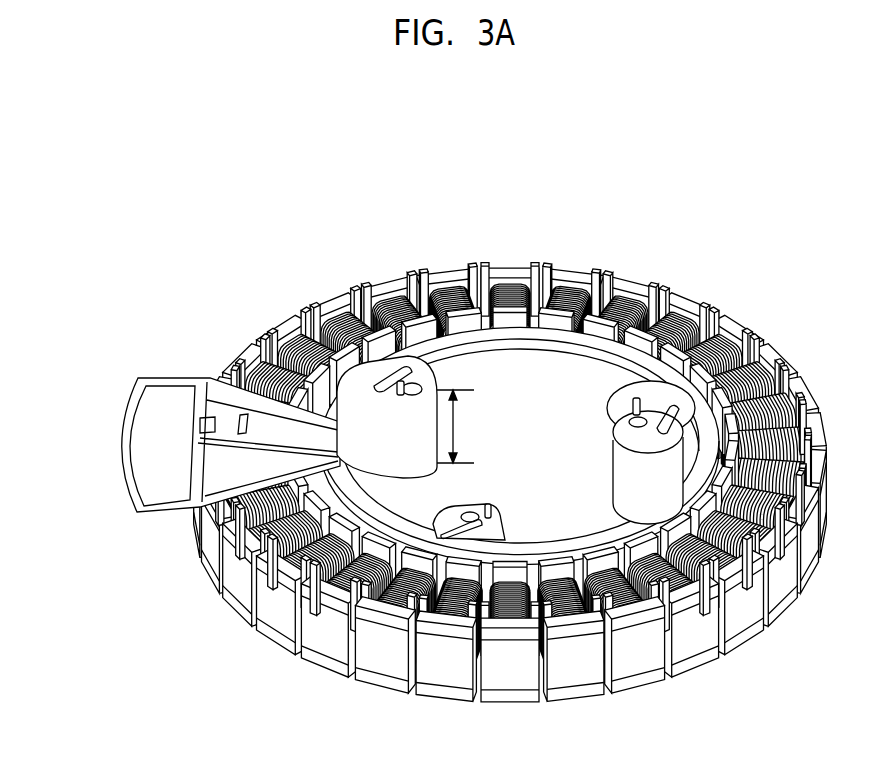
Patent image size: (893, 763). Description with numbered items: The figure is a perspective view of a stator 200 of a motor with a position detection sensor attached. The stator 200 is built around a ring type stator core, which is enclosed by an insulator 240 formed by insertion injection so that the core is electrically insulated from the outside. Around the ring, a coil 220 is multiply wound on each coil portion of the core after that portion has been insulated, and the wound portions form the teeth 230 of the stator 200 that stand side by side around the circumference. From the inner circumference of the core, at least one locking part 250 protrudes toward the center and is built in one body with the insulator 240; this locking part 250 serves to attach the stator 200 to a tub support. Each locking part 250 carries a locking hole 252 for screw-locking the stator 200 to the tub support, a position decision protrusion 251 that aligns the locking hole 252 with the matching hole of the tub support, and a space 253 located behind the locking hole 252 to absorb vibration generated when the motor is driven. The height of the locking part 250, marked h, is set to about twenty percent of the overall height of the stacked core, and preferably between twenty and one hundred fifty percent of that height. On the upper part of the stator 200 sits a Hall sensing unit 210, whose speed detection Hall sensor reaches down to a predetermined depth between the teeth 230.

The stator 200 is at (647, 235).
The Hall sensing unit 210 is at (138, 378).
The coil 220 is at (393, 298).
The teeth 230 is at (447, 272).
The insulator 240 is at (555, 340).
The locking part 250 is at (612, 425).
The position decision protrusion 251 is at (637, 398).
The locking hole 252 is at (630, 420).
The space 253 is at (673, 413).